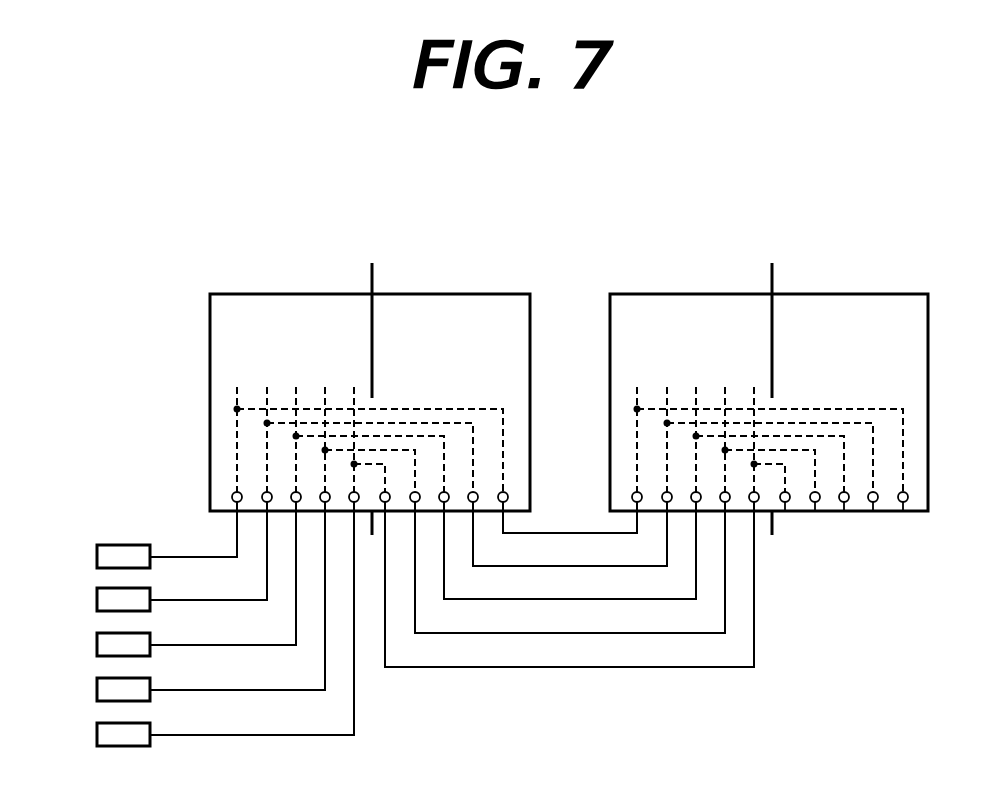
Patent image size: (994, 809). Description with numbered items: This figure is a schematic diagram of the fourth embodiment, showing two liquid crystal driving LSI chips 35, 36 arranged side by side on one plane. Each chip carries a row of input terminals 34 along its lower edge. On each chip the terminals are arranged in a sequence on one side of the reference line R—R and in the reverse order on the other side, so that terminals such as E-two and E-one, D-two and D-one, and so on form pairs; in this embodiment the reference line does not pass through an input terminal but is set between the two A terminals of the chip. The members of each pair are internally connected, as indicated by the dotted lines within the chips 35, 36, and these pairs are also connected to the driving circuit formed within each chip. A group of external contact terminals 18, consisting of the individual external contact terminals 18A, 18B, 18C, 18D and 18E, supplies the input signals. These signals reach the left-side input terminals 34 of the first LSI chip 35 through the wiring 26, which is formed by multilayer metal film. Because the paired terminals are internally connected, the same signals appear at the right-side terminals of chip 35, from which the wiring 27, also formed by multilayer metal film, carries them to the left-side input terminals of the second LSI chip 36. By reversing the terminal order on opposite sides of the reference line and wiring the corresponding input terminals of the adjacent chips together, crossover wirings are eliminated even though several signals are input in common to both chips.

The external contact terminals 18 is at (96, 625).
The external contact terminal 18A is at (97, 736).
The external contact terminal 18B is at (97, 691).
The external contact terminal 18C is at (97, 646).
The external contact terminal 18D is at (97, 601).
The external contact terminal 18E is at (97, 558).
The wiring 26 is at (250, 737).
The wiring 27 is at (623, 670).
The input terminal 34 is at (233, 494).
The LSI chip 35 is at (220, 373).
The LSI chip 36 is at (620, 373).